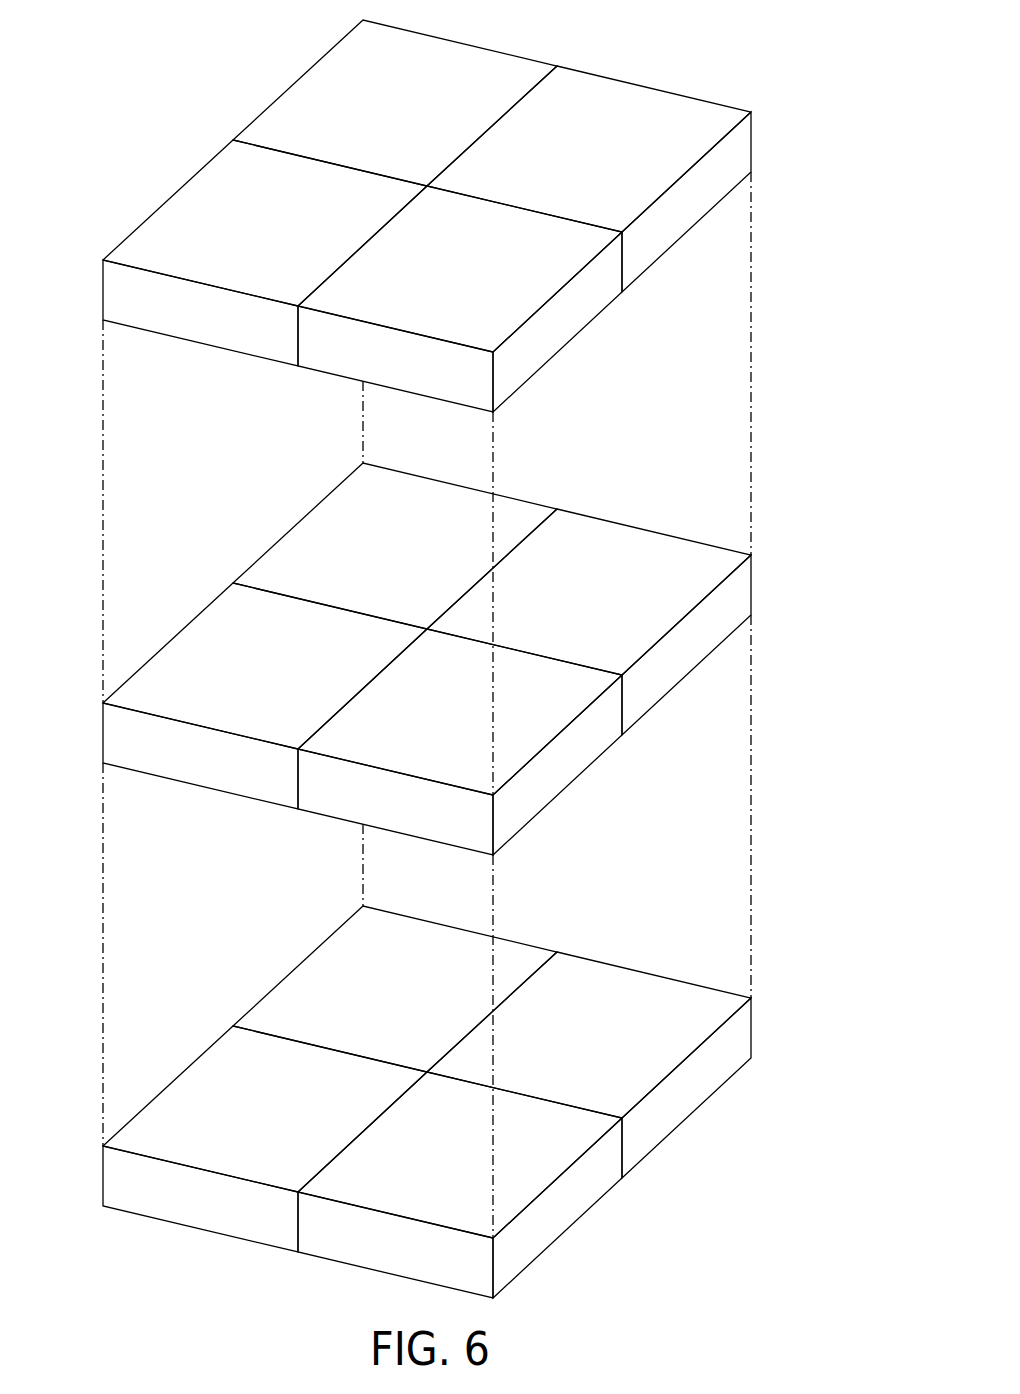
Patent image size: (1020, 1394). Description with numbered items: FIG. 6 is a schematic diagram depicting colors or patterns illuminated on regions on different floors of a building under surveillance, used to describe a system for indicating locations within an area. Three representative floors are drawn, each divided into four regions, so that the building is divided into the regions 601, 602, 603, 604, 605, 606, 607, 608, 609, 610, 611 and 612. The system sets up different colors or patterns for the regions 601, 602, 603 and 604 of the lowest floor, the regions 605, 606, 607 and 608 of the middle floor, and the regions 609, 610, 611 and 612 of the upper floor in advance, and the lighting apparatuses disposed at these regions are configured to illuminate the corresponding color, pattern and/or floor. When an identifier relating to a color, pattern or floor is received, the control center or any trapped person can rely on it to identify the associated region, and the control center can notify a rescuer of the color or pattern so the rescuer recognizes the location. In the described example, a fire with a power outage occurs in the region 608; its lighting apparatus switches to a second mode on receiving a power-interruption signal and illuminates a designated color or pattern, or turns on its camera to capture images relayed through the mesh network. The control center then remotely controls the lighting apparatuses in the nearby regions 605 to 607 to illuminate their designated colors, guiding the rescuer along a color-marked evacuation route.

The region 601 is at (563, 1211).
The region 602 is at (692, 1090).
The region 603 is at (202, 1086).
The region 604 is at (330, 981).
The region 605 is at (563, 768).
The region 606 is at (636, 558).
The region 607 is at (202, 643).
The region 608 is at (330, 538).
The region 609 is at (563, 325).
The region 610 is at (636, 115).
The region 611 is at (202, 213).
The region 612 is at (330, 95).